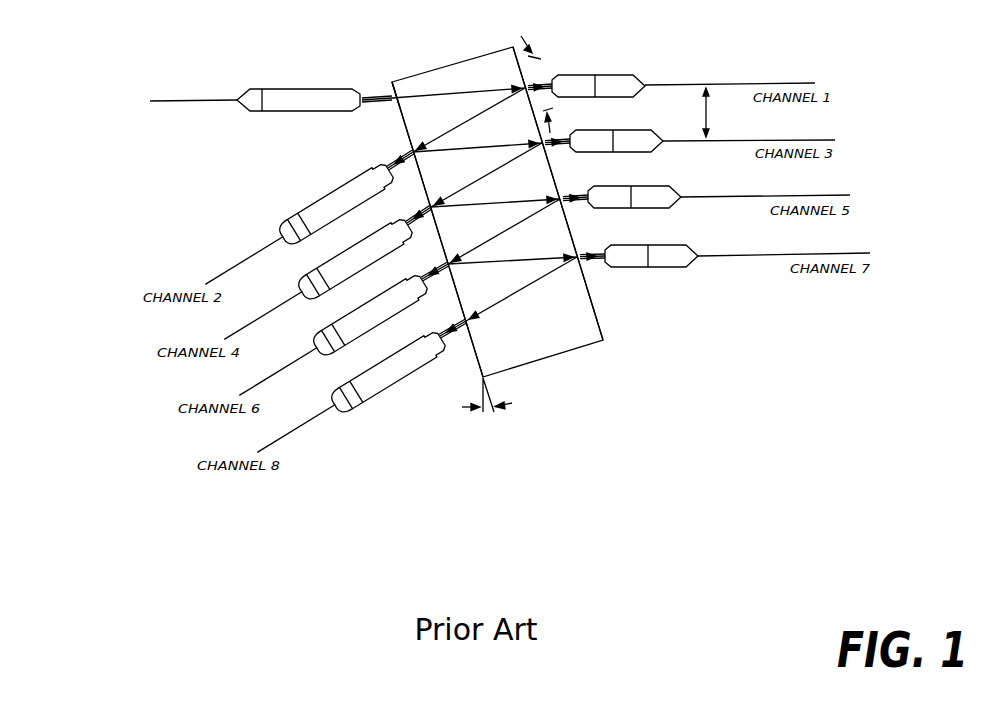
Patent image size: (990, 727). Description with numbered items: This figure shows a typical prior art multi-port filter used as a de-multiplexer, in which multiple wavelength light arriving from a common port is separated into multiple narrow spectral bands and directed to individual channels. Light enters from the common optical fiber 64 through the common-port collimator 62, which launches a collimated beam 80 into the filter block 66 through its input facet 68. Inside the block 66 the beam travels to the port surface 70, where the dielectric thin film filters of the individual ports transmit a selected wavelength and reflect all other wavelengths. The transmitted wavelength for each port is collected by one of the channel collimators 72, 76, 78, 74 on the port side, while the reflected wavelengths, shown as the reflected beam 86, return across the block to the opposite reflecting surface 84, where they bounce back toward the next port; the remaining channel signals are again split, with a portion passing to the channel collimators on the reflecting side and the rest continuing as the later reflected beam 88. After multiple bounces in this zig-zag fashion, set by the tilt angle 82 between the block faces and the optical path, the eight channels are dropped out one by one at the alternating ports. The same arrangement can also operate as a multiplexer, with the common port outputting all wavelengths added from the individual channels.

The input collimator 62 is at (278, 89).
The input optical fiber 64 is at (232, 100).
The optical block 66 is at (460, 62).
The input facet 68 is at (390, 101).
The output facet 70 is at (600, 322).
The output collimator channel 1 72 is at (552, 78).
The output collimator channel 7 74 is at (607, 250).
The output collimator channel 3 76 is at (570, 134).
The output collimator channel 5 78 is at (590, 190).
The collimated beam 80 is at (376, 97).
The tilt angle 82 is at (476, 371).
The partially reflective surface 84 is at (412, 150).
The reflected beam 86 is at (419, 147).
The reflected beam 88 is at (471, 319).